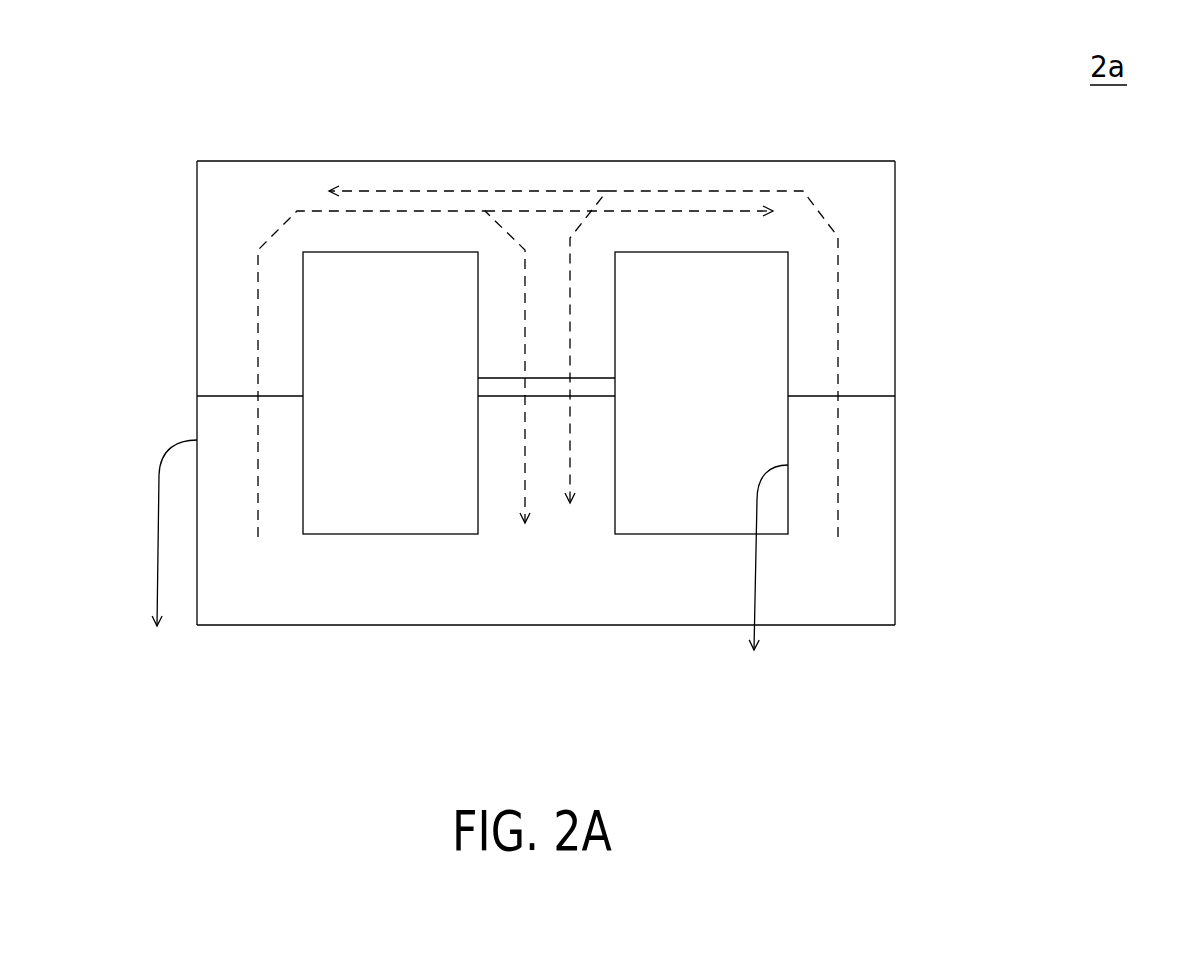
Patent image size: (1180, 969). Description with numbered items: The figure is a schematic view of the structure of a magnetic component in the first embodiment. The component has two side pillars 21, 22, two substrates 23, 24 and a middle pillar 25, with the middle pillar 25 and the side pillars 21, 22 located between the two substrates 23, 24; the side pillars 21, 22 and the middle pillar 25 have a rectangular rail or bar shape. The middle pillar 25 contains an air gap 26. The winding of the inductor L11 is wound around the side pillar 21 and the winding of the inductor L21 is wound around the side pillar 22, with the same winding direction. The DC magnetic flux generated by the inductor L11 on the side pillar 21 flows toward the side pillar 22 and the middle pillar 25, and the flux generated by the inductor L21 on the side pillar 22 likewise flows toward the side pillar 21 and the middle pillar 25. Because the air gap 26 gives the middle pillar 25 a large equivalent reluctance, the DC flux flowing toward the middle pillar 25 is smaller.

The side pillar 21 is at (213, 357).
The side pillar 22 is at (867, 332).
The substrate 23 is at (547, 184).
The substrate 24 is at (545, 594).
The middle pillar 25 is at (473, 377).
The air gap 26 is at (593, 380).
The inductor L11 is at (305, 446).
The inductor L21 is at (896, 469).